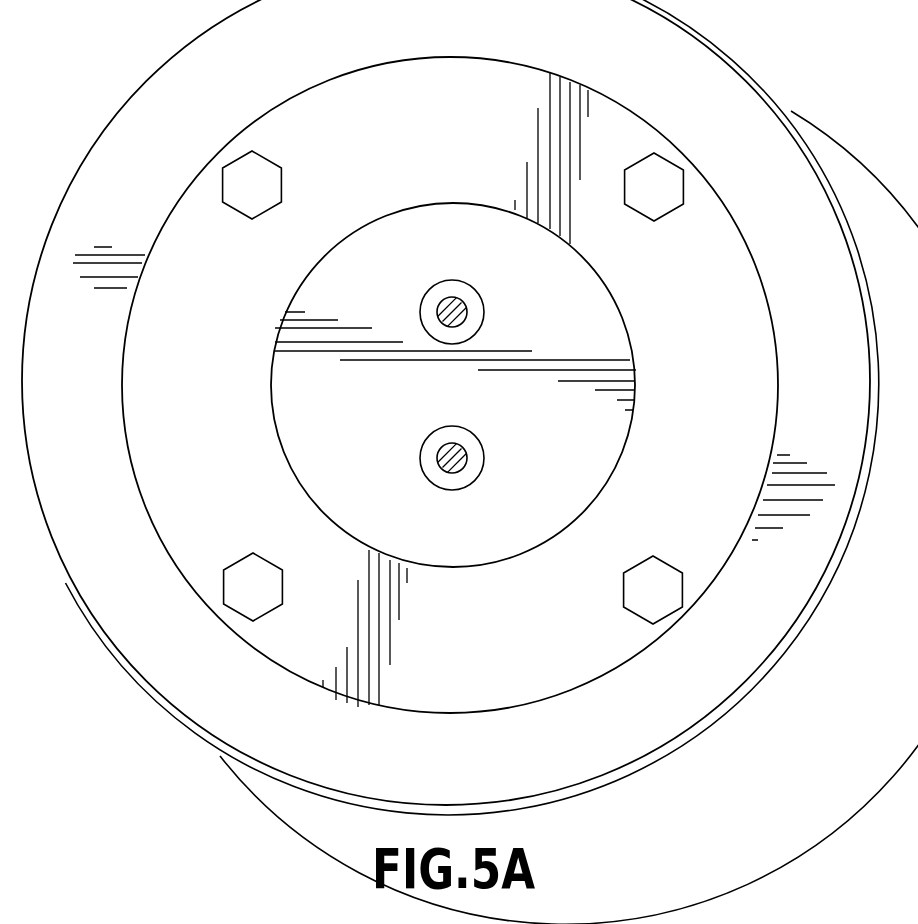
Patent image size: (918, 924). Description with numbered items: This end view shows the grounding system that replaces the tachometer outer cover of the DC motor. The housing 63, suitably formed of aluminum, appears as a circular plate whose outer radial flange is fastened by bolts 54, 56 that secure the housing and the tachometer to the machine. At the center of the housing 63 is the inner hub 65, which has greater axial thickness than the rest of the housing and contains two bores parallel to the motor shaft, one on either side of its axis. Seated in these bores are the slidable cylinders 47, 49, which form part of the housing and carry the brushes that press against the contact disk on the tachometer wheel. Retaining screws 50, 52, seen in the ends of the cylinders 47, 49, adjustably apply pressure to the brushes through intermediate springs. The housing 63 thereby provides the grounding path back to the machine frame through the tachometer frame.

The slidable cylinder 47 is at (478, 293).
The slidable cylinder 49 is at (479, 436).
The retaining screw 50 is at (445, 298).
The retaining screw 52 is at (445, 447).
The bolt 54 is at (245, 165).
The bolt 56 is at (245, 602).
The housing 63 is at (621, 722).
The inner hub 65 is at (635, 382).